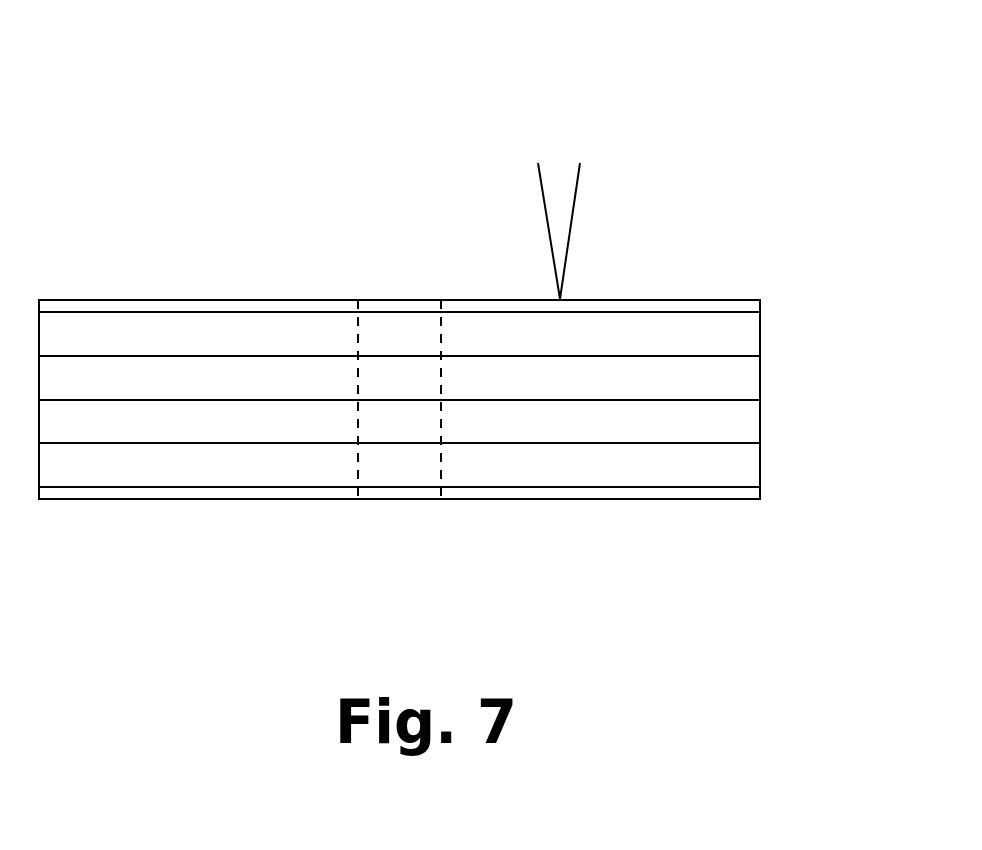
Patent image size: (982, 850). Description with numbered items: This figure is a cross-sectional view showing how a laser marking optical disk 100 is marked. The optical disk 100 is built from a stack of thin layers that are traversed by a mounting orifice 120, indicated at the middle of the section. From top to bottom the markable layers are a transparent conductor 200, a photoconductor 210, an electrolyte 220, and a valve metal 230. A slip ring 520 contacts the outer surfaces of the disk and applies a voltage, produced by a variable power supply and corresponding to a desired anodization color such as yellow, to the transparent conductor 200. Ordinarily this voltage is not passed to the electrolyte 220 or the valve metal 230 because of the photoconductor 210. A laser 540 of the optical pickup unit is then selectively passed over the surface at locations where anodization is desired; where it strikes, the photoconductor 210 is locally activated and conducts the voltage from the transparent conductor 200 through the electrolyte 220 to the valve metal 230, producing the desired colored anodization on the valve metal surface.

The optical disk 100 is at (462, 296).
The mounting orifice 120 is at (410, 269).
The transparent conductor 200 is at (760, 330).
The photoconductor 210 is at (760, 374).
The electrolyte 220 is at (760, 418).
The valve metal 230 is at (760, 462).
The slip ring 520 is at (758, 299).
The laser component 540 is at (577, 188).